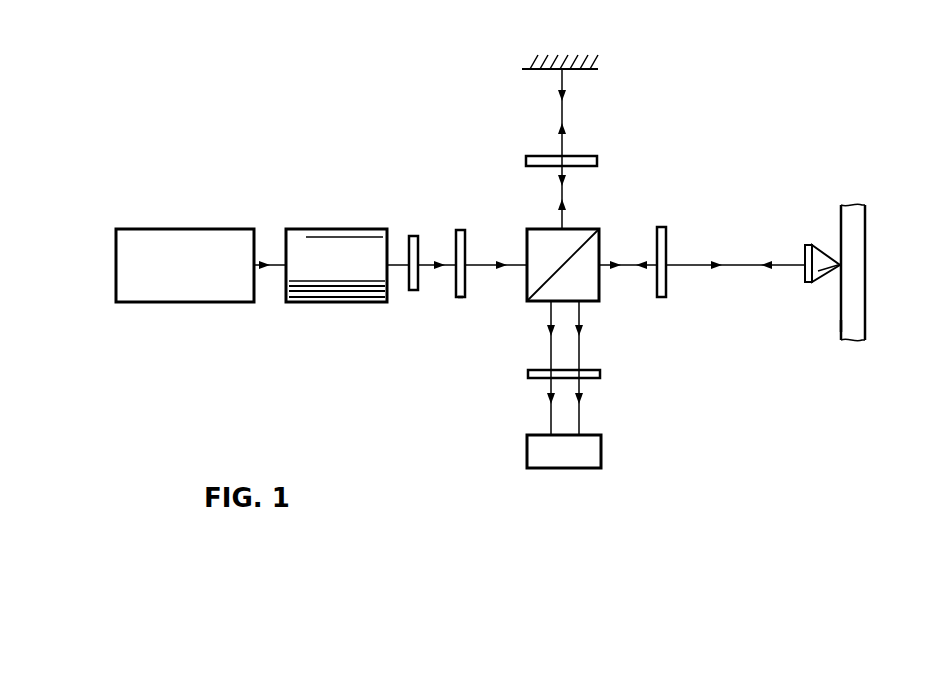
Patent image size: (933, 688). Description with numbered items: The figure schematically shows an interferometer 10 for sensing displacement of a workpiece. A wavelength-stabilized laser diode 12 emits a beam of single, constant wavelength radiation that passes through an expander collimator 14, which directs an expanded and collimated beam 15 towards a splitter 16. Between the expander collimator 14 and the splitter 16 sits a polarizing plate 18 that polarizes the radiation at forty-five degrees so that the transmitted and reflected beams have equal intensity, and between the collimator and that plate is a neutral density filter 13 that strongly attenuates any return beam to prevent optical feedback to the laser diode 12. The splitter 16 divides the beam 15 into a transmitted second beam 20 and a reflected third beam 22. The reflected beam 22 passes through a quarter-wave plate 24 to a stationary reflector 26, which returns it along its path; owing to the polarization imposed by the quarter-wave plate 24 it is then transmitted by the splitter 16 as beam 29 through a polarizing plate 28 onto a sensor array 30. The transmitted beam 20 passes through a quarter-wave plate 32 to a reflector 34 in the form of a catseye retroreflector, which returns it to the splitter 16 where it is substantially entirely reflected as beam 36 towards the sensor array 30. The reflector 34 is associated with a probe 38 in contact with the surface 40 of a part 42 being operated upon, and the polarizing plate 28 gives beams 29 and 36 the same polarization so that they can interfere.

The interferometer 10 is at (798, 130).
The laser diode 12 is at (152, 240).
The neutral density filter 13 is at (416, 236).
The expander collimator 14 is at (330, 250).
The expanded and collimated beam 15 is at (481, 263).
The splitter 16 is at (585, 232).
The polarizing plate 18 is at (460, 297).
The second beam 20 is at (627, 264).
The third beam 22 is at (560, 214).
The quarter-wave plate 24 is at (593, 156).
The stationary reflector 26 is at (584, 69).
The polarizing plate 28 is at (600, 375).
The beam 29 is at (551, 346).
The sensor array 30 is at (592, 453).
The quarter-wave plate 32 is at (663, 229).
The reflector 34 is at (815, 245).
The beam 36 is at (582, 349).
The probe 38 is at (826, 270).
The surface 40 is at (841, 326).
The part 42 is at (858, 273).